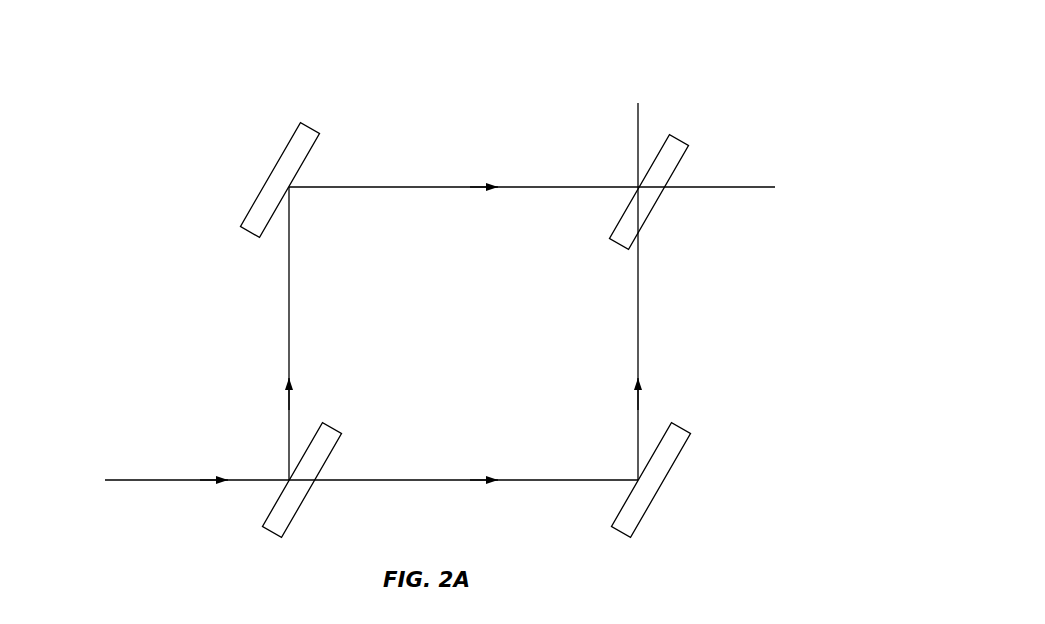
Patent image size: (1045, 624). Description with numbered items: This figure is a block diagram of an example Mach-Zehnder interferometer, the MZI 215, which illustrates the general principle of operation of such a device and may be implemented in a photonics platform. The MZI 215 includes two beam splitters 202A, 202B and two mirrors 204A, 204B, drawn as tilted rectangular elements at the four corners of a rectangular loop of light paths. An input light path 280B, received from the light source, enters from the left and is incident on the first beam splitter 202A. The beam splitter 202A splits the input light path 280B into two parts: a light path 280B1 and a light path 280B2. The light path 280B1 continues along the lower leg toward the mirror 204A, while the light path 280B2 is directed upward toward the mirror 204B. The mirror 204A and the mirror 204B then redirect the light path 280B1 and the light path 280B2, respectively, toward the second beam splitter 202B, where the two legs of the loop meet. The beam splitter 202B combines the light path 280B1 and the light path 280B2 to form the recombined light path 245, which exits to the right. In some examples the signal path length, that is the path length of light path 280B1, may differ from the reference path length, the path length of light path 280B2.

The MZI 215 is at (160, 93).
The beam splitter 202A is at (256, 528).
The beam splitter 202B is at (670, 138).
The mirror 204A is at (604, 528).
The mirror 204B is at (262, 183).
The recombined light path 245 is at (735, 185).
The input light path 280B is at (118, 480).
The light path 280B1 is at (432, 480).
The light path 280B2 is at (432, 188).